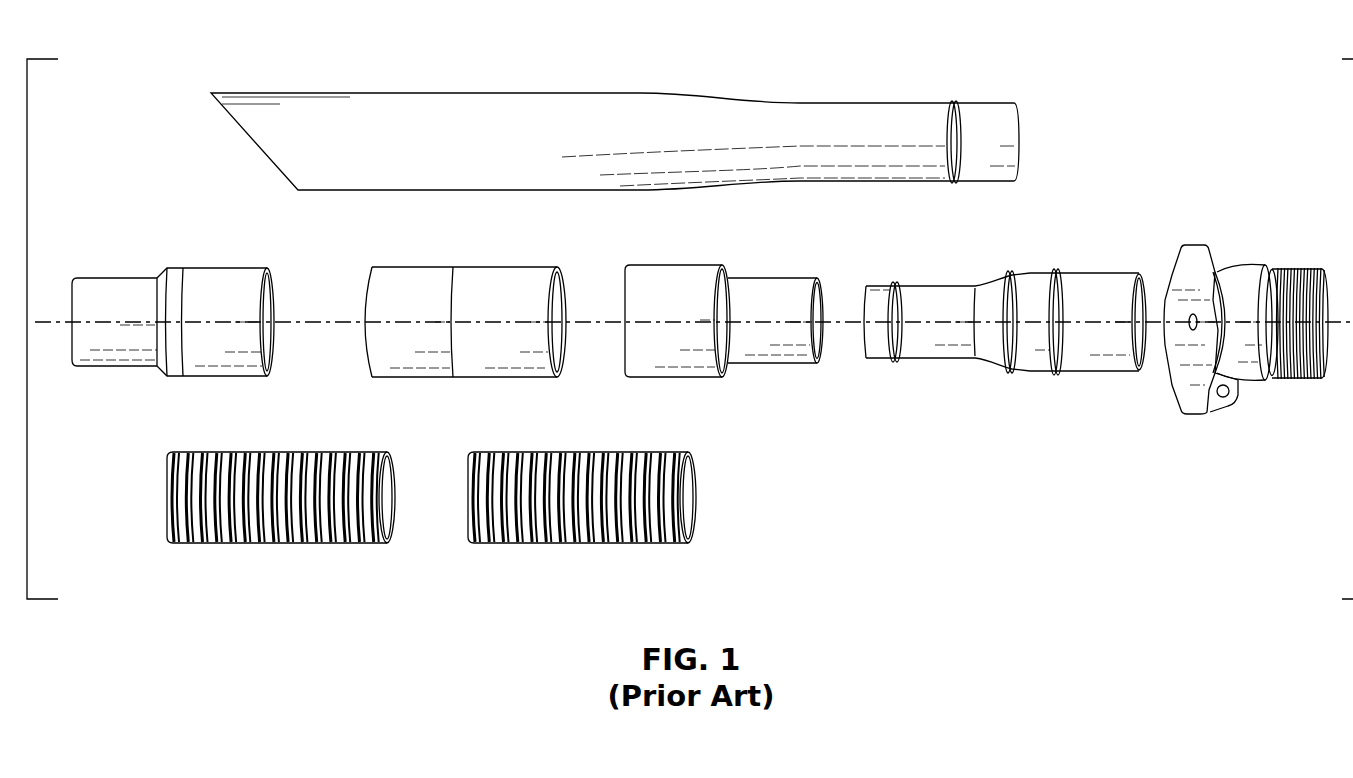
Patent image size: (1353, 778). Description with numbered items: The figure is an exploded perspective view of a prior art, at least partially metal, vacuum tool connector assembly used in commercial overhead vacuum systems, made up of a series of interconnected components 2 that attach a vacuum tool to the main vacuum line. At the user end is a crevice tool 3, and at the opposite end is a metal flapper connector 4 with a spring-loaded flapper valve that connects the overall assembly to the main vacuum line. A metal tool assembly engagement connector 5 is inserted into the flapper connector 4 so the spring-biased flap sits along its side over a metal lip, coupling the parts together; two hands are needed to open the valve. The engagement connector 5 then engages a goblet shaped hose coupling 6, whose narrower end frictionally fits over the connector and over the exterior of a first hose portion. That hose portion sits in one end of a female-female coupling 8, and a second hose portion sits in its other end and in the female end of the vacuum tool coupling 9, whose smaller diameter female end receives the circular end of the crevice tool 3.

The interconnected components 2 is at (926, 43).
The crevice tool 3 is at (498, 101).
The metal flapper connector 4 is at (1248, 268).
The tool assembly engagement connector 5 is at (1014, 275).
The goblet shaped hose coupling 6 is at (778, 352).
The female-female coupling 8 is at (404, 280).
The vacuum tool coupling 9 is at (217, 272).